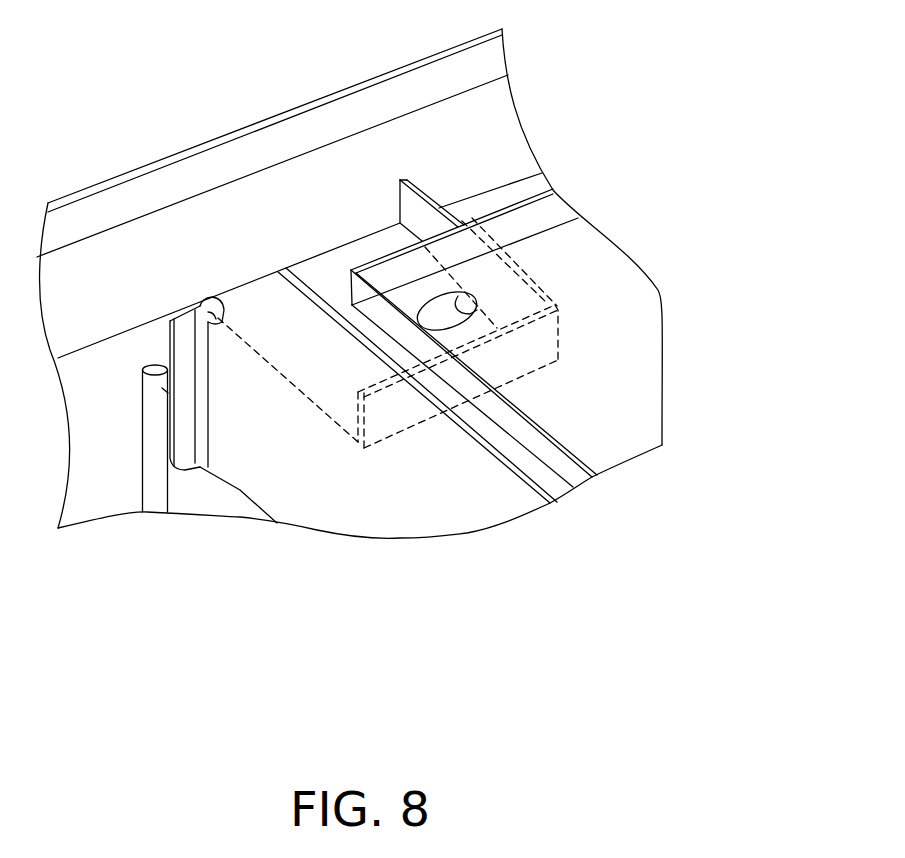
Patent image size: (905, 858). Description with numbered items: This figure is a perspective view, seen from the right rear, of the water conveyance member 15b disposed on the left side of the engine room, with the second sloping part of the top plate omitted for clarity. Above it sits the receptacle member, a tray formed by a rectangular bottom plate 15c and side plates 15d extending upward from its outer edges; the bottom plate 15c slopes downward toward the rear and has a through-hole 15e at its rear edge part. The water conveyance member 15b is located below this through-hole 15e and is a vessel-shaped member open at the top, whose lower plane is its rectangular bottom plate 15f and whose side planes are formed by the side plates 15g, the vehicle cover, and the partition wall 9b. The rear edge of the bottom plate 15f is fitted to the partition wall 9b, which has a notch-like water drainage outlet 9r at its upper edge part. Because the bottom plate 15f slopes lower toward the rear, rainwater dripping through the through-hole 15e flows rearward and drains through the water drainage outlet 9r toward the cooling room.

The water drainage outlet 9r is at (206, 300).
The partition wall 9b is at (258, 472).
The water conveyance member 15b is at (353, 443).
The bottom plate 15c is at (615, 312).
The side plate 15d is at (539, 215).
The through-hole 15e is at (478, 312).
The bottom plate 15f is at (315, 363).
The side plate 15g is at (404, 413).